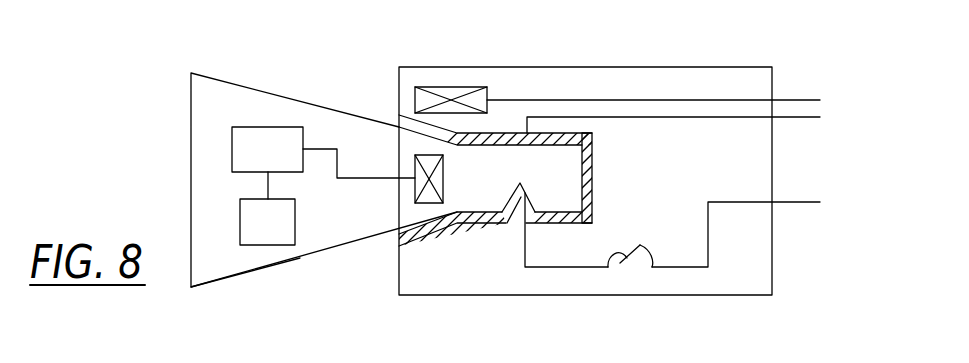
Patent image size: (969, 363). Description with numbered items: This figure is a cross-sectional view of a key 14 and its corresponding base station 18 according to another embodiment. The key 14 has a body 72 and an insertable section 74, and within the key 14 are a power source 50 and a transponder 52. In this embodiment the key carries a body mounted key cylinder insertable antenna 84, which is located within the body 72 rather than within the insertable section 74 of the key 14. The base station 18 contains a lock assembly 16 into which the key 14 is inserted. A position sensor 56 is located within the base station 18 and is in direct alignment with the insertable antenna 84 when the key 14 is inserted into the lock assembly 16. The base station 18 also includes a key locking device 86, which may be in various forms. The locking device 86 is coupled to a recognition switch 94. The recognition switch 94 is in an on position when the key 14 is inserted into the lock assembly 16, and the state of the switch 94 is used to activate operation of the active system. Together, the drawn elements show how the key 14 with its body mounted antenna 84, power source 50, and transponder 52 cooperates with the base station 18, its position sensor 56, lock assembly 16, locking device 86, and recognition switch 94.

The key 14 is at (191, 207).
The body 72 is at (235, 277).
The transponder 52 is at (232, 148).
The power source 50 is at (272, 245).
The base station 18 is at (772, 178).
The position sensor 56 is at (455, 87).
The insertable antenna 84 is at (417, 192).
The lock assembly 16 is at (593, 163).
The insertable section 74 is at (593, 192).
The locking device 86 is at (513, 237).
The recognition switch 94 is at (612, 258).